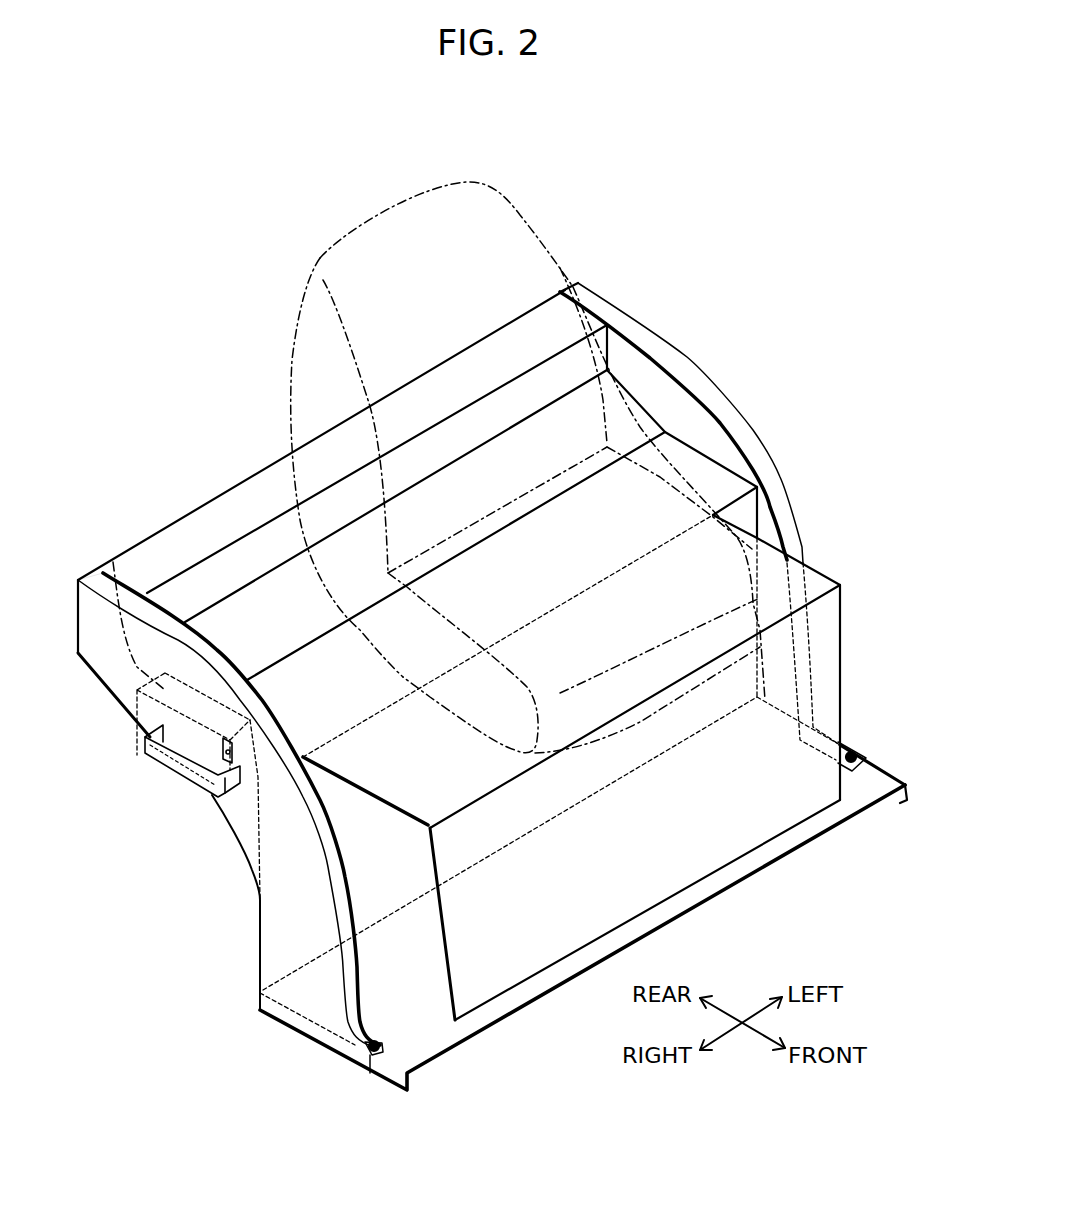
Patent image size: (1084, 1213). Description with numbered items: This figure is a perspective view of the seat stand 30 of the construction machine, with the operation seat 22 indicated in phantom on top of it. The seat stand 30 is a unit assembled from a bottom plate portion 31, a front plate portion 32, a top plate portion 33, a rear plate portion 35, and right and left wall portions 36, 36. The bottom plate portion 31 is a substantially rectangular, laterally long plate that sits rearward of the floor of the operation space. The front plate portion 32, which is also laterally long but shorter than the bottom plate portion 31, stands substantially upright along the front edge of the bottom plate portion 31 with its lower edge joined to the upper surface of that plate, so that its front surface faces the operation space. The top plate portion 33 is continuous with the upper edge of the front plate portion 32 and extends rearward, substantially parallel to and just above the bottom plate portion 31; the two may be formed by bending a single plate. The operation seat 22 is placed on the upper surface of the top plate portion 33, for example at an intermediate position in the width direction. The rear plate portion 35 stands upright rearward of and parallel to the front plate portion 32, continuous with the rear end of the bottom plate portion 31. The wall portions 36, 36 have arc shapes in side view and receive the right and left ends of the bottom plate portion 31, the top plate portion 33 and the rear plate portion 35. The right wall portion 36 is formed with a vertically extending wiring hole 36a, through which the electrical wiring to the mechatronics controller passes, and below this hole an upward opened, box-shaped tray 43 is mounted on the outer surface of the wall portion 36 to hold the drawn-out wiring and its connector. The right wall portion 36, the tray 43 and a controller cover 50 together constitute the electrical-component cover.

The operation seat 22 is at (552, 240).
The seat stand 30 is at (492, 686).
The bottom plate portion 31 is at (833, 833).
The front plate portion 32 is at (747, 823).
The top plate portion 33 is at (740, 622).
The rear plate portion 35 is at (250, 860).
The wall portion 36 is at (683, 383).
The wiring hole 36a is at (220, 767).
The tray 43 is at (171, 784).
The controller cover 50 is at (124, 598).